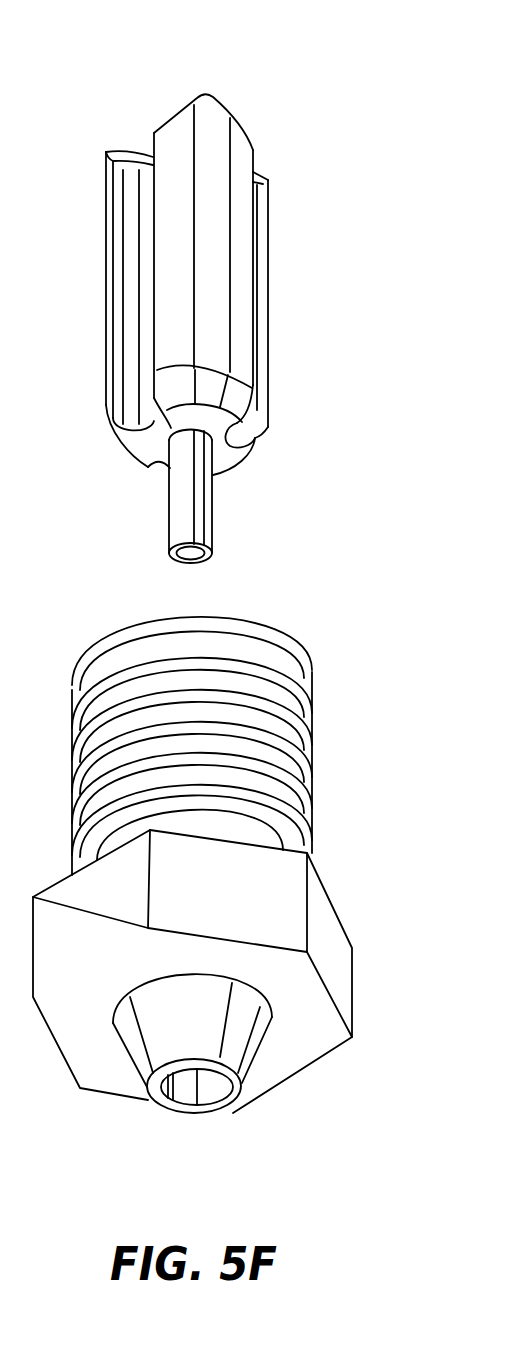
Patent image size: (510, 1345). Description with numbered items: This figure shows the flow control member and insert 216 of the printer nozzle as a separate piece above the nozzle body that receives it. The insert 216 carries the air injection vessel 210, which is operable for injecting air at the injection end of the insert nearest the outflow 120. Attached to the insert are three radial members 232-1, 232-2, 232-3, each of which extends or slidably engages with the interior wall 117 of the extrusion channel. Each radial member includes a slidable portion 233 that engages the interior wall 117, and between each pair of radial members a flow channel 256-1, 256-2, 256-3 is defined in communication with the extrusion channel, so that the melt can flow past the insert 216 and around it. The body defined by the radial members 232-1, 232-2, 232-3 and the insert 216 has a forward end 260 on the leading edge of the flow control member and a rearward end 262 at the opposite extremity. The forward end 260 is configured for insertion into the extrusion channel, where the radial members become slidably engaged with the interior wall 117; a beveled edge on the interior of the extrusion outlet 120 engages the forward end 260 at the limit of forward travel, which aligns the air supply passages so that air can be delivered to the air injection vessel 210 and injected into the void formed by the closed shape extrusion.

The air injection vessel 210 is at (168, 576).
The insert 216 is at (180, 522).
The radial member 232-1 is at (105, 288).
The radial member 232-2 is at (208, 123).
The radial member 232-3 is at (273, 413).
The slidable portion 233 is at (210, 288).
The flow channel 256-1 is at (127, 181).
The flow channel 256-2 is at (260, 360).
The flow channel 256-3 is at (160, 466).
The forward end 260 is at (232, 488).
The rearward end 262 is at (180, 90).
The outflow 120 is at (160, 1108).
The interior wall 117 is at (183, 1083).